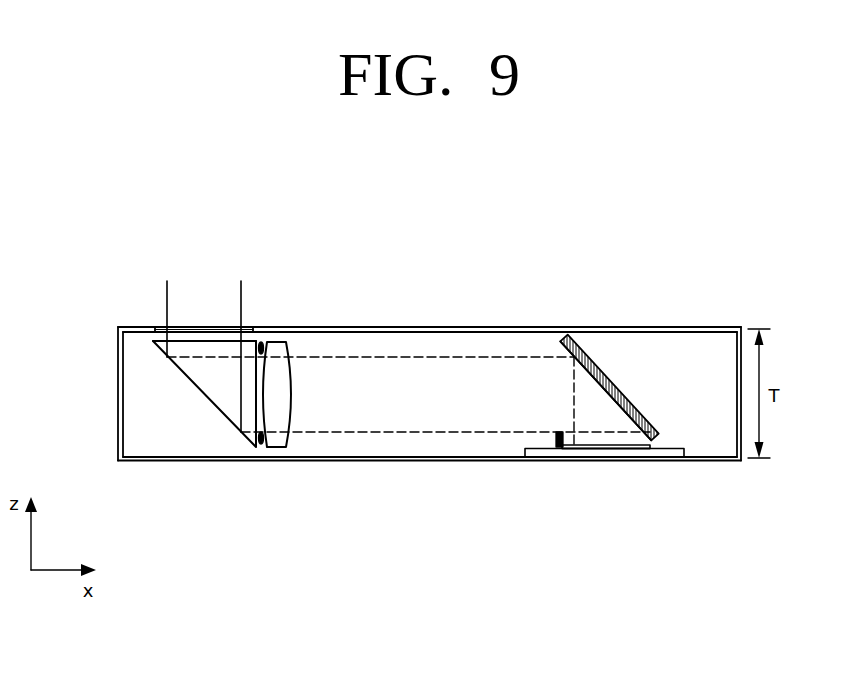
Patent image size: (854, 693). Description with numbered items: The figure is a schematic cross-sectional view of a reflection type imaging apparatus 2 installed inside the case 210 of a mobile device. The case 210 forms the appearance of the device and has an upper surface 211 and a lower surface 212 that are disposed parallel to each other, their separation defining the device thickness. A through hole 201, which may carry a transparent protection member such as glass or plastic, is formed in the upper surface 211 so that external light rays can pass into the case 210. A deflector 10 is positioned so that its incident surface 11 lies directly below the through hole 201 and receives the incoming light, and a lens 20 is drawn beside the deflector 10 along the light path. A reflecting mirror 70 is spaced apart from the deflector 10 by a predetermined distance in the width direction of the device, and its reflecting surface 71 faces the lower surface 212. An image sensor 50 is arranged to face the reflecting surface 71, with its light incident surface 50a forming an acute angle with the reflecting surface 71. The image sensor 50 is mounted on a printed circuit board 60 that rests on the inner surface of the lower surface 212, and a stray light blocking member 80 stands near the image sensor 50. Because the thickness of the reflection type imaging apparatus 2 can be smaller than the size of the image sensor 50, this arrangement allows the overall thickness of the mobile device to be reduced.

The reflection type imaging apparatus 2 is at (372, 339).
The deflector 10 is at (224, 442).
The incident surface 11 is at (205, 341).
The lens module 20 is at (291, 466).
The image sensor 50 is at (645, 451).
The light incident surface 50a is at (603, 447).
The printed circuit board 60 is at (573, 468).
The reflecting mirror 70 is at (577, 336).
The reflecting surface 71 is at (586, 372).
The stray light blocking member 80 is at (556, 440).
The through hole 201 is at (160, 328).
The case 210 is at (160, 478).
The upper surface 211 is at (630, 327).
The lower surface 212 is at (632, 461).